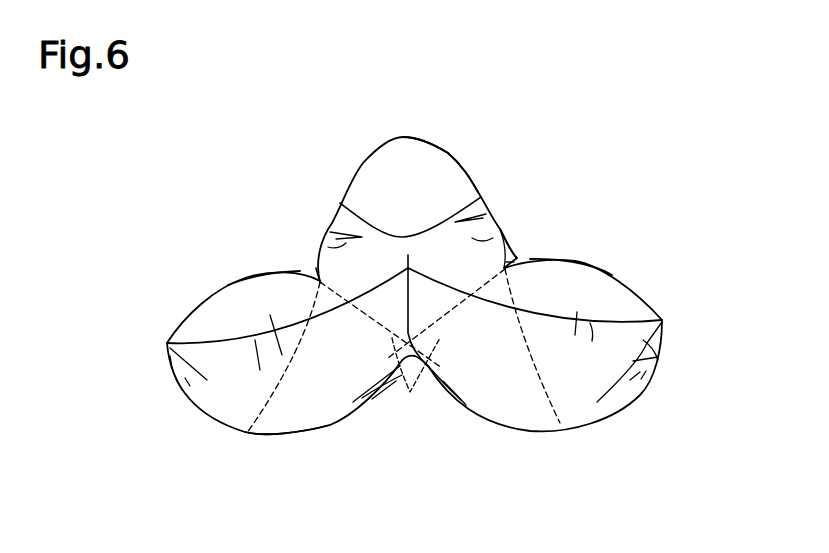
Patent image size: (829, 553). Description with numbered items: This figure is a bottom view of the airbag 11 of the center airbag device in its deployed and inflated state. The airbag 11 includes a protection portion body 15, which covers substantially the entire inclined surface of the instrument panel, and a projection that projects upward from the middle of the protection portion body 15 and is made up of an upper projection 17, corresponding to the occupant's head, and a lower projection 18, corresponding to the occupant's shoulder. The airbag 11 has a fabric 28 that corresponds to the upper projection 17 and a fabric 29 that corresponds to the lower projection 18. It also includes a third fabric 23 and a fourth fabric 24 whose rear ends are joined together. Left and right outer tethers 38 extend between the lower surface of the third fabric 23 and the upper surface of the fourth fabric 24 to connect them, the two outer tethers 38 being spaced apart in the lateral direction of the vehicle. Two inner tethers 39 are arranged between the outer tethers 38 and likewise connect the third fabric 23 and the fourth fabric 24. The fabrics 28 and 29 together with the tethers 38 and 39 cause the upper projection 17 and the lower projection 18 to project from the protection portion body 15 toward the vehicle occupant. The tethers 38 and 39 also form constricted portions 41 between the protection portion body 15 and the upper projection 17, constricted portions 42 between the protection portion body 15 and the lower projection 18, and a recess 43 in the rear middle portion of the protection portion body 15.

The airbag 11 is at (236, 158).
The lower projection 18 is at (414, 192).
The upper projection 17 is at (356, 152).
The fabric 29 is at (469, 147).
The fabric 28 is at (448, 154).
The constricted portions 42 is at (430, 231).
The constricted portions 41 is at (546, 203).
The third fabric 23 is at (258, 272).
The protection portion body 15 is at (184, 300).
The outer tethers 38 is at (279, 404).
The fourth fabric 24 is at (287, 437).
The recess 43 is at (402, 396).
The inner tethers 39 is at (416, 379).